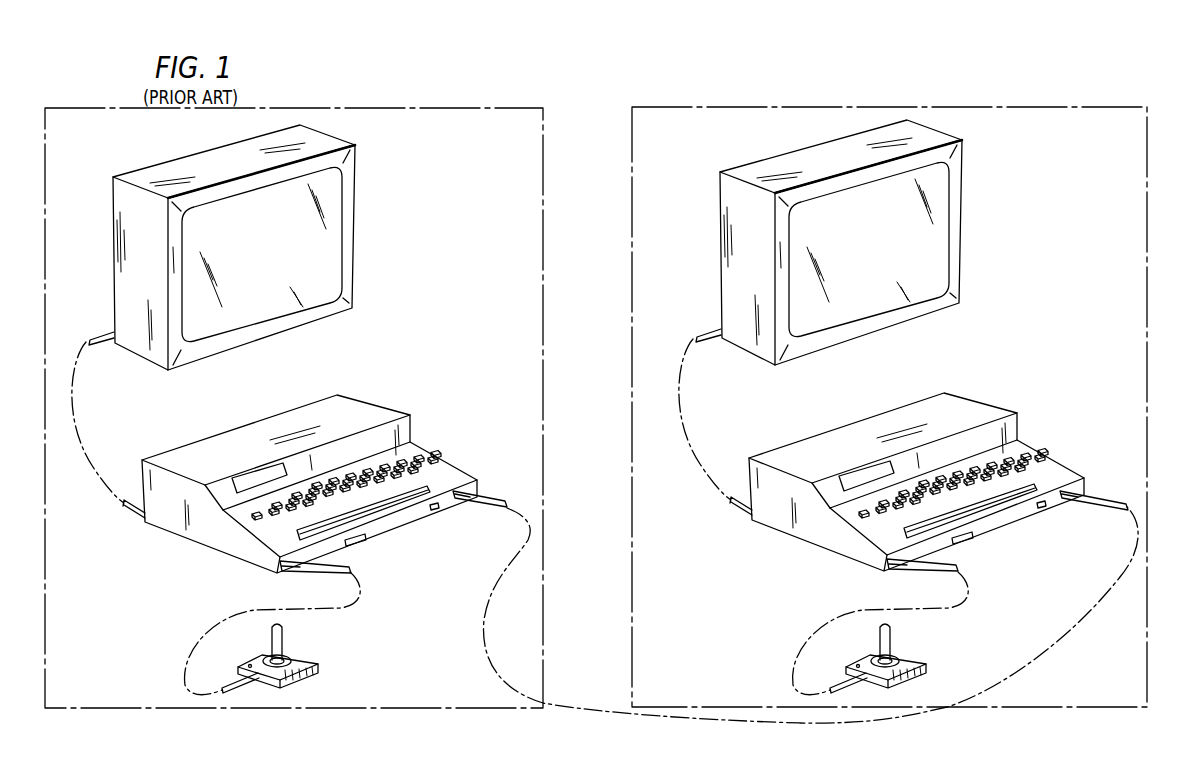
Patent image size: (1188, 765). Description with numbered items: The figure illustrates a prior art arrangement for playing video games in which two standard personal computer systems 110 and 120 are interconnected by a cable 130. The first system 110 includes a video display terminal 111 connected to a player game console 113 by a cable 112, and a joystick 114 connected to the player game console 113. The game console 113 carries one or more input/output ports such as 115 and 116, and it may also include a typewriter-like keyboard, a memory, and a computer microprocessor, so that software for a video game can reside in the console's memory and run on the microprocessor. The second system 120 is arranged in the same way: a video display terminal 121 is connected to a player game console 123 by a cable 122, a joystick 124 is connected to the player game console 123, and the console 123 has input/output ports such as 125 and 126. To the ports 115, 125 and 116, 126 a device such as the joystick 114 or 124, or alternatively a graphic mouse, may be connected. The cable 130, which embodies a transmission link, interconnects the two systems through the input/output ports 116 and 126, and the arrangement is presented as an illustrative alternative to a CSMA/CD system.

The personal computer system 110 is at (379, 108).
The video display terminal 111 is at (358, 188).
The cable 112 is at (106, 346).
The player game console 113 is at (409, 414).
The joystick 114 is at (308, 661).
The input/output port 115 is at (320, 551).
The input/output port 116 is at (470, 500).
The personal computer system 120 is at (1008, 107).
The video display terminal 121 is at (963, 224).
The cable 122 is at (703, 347).
The player game console 123 is at (1017, 413).
The joystick 124 is at (915, 655).
The input/output port 125 is at (917, 545).
The input/output port 126 is at (1061, 498).
The cable 130 is at (501, 497).